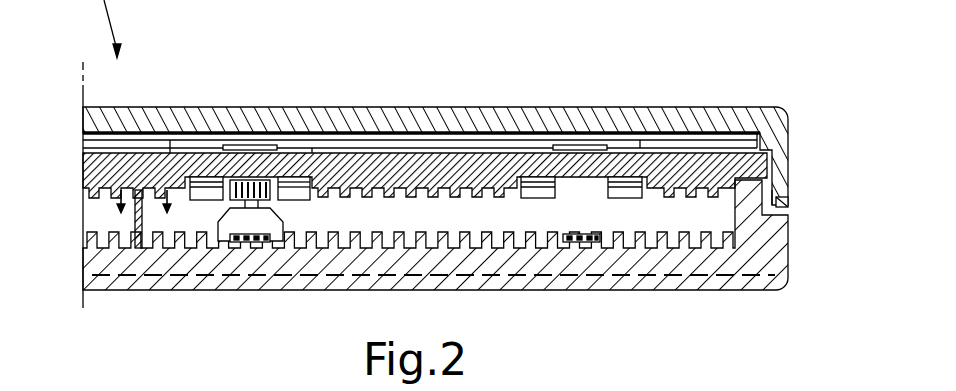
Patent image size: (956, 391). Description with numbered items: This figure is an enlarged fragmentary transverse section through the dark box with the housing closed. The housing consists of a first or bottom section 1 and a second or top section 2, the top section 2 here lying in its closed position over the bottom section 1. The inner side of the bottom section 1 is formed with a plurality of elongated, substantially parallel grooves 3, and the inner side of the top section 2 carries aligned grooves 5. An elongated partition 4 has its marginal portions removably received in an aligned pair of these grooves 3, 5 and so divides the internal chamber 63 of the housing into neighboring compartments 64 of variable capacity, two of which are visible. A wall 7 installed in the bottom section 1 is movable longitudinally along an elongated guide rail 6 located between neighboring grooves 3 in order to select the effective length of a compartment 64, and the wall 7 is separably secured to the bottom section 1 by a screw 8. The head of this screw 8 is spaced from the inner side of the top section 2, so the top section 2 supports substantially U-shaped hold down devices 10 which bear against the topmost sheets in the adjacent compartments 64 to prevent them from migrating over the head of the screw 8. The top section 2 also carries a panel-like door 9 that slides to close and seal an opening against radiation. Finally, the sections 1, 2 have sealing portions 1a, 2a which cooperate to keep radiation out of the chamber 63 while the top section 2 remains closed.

The first or bottom section 1 is at (782, 242).
The sealing portion 1a is at (780, 201).
The second or top section 2 is at (782, 150).
The sealing portion 2a is at (770, 197).
The grooves 3 is at (443, 237).
The partitions 4 is at (136, 222).
The grooves 5 is at (378, 199).
The guide rail 6 is at (598, 243).
The wall 7 is at (227, 241).
The screw 8 is at (252, 180).
The door 9 is at (487, 140).
The hold down devices 10 is at (617, 192).
The internal chamber 63 is at (122, 202).
The compartments 64 is at (97, 228).